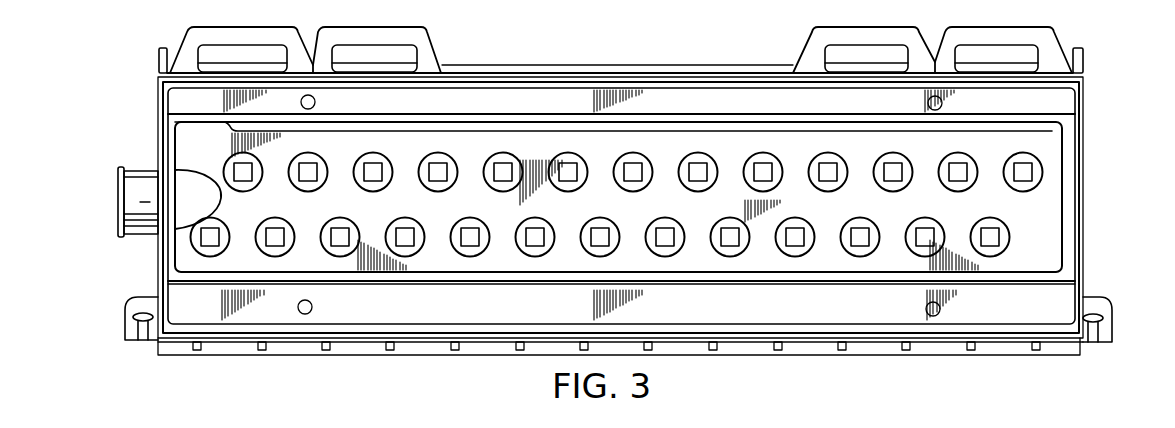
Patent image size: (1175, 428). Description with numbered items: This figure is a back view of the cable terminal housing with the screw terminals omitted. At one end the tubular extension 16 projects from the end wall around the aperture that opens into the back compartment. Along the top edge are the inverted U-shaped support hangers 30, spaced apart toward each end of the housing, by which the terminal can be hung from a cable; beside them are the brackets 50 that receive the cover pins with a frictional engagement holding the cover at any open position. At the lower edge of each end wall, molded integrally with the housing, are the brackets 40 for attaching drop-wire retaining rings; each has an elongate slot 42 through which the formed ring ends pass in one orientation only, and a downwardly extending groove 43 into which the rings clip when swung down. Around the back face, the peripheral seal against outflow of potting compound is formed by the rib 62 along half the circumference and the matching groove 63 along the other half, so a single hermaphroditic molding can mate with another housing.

The tubular extension 16 is at (143, 170).
The support hangers 30 is at (428, 33).
The brackets 40 is at (140, 297).
The elongate slot 42 is at (133, 318).
The groove 43 is at (142, 338).
The brackets 50 is at (158, 50).
The rib 62 is at (1023, 87).
The groove 63 is at (160, 258).